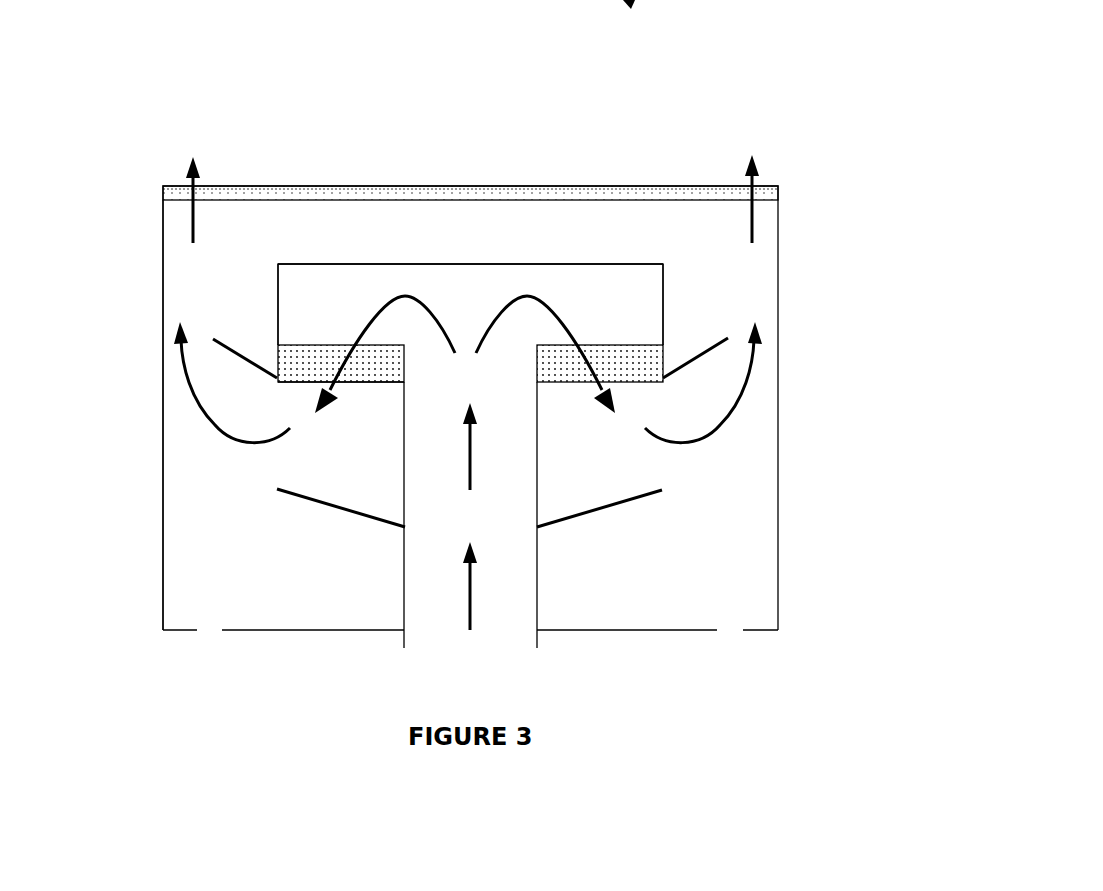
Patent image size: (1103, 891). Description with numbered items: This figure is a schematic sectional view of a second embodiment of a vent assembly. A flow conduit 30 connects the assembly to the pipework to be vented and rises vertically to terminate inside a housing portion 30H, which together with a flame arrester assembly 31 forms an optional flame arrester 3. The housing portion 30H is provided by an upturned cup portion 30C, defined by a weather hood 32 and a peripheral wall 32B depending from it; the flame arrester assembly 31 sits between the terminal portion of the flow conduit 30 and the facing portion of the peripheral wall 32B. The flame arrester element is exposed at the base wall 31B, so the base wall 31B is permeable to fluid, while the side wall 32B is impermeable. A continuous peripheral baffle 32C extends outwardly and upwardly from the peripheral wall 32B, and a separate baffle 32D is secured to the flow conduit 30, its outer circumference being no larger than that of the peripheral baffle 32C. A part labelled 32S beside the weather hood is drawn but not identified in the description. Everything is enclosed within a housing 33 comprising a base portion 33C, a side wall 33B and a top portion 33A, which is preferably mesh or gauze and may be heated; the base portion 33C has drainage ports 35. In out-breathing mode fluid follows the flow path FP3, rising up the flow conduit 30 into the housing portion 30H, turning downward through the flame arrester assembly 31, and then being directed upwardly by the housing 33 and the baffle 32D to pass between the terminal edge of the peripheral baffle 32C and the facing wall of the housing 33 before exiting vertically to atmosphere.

The flame arrester 3 is at (618, 460).
The flow conduit 30 is at (537, 575).
The upturned cup portion 30C is at (563, 298).
The housing portion 30H is at (640, 329).
The flame arrester assembly 31 is at (305, 362).
The base wall 31B is at (278, 383).
The weather hood 32 is at (388, 263).
The peripheral wall 32B is at (665, 310).
The peripheral baffle 32C is at (700, 357).
The baffle 32D is at (300, 500).
The inner housing side wall 32S is at (277, 360).
The housing 33 is at (778, 330).
The top portion 33A is at (667, 197).
The side wall 33B is at (163, 420).
The base portion 33C is at (170, 632).
The drainage ports 35 is at (727, 632).
The flow path FP3 is at (470, 576).